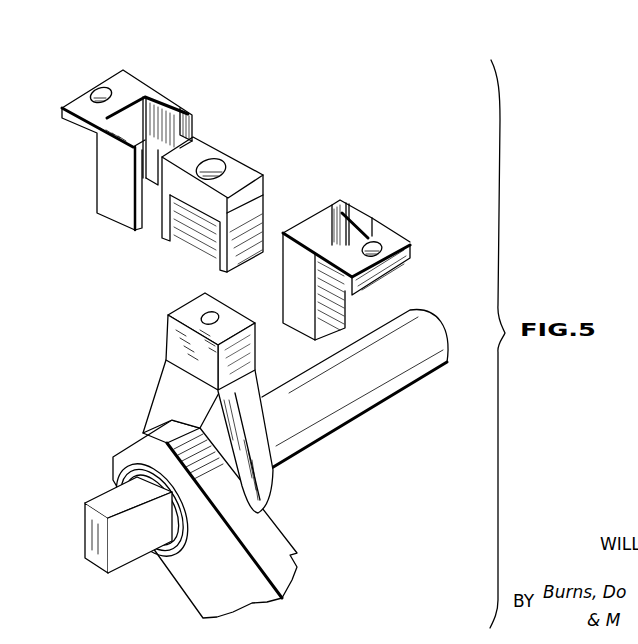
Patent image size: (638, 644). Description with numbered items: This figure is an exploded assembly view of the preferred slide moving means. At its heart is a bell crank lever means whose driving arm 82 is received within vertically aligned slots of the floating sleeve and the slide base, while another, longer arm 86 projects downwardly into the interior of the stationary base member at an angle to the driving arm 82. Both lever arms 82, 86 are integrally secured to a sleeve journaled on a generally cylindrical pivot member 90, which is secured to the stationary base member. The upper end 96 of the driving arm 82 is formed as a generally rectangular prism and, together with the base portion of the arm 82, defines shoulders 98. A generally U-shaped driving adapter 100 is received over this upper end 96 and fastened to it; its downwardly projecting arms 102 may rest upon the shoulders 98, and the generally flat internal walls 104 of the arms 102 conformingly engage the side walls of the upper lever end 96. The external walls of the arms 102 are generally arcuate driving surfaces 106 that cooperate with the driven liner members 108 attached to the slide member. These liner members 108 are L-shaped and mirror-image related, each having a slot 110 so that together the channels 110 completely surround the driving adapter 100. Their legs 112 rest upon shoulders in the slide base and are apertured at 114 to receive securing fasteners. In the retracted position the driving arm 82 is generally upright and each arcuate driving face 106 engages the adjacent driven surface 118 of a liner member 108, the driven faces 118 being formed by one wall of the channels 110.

The driving arm 82 is at (266, 455).
The longer arm 86 is at (284, 557).
The pivot member 90 is at (368, 398).
The upper end 96 is at (174, 338).
The shoulders 98 is at (164, 360).
The driving adapter 100 is at (213, 200).
The arms 102 is at (197, 231).
The internal walls 104 is at (206, 219).
The arcuate driving surfaces 106 is at (258, 232).
The driven liner members 108 is at (240, 183).
The slot 110 is at (163, 126).
The legs 112 is at (72, 138).
The apertures 114 is at (94, 88).
The driven surfaces 118 is at (140, 96).